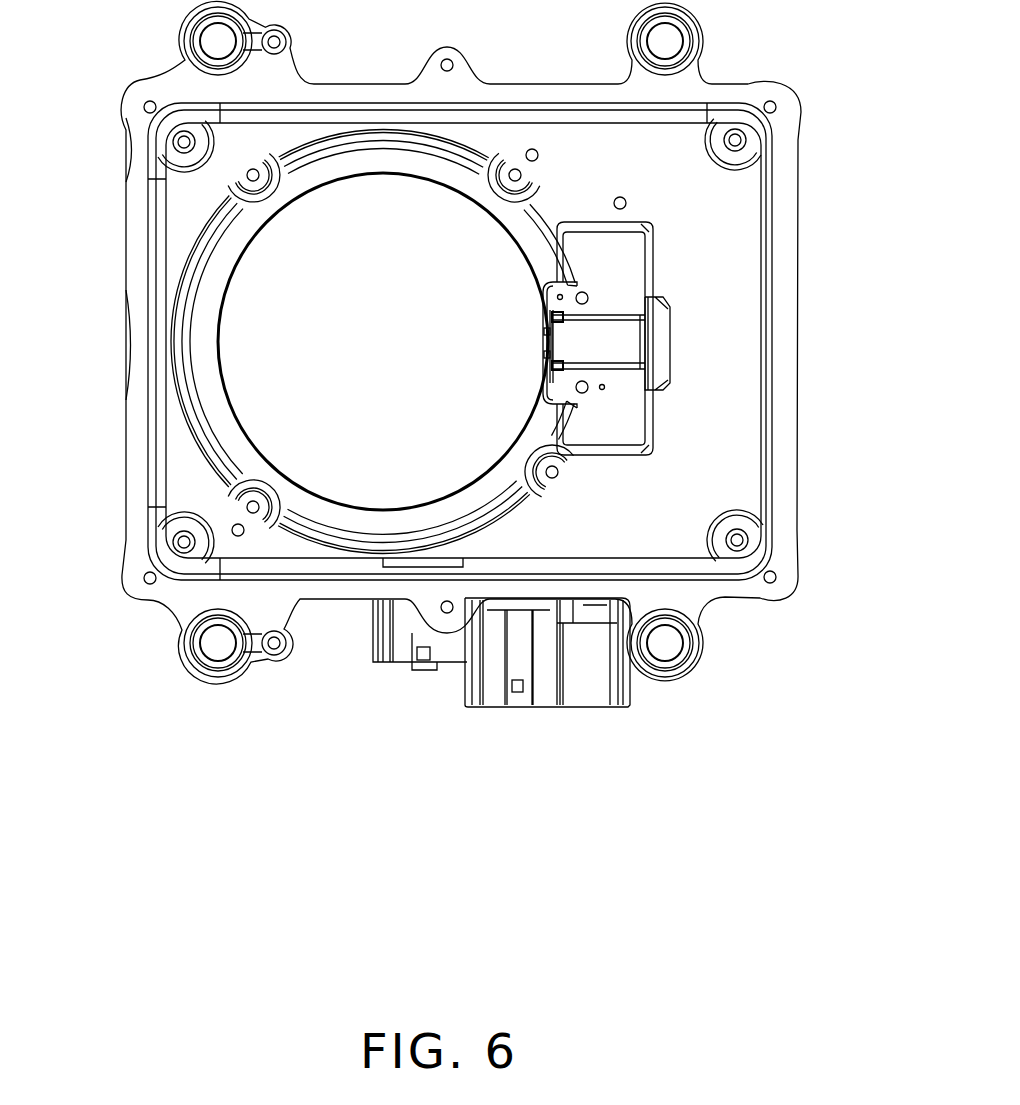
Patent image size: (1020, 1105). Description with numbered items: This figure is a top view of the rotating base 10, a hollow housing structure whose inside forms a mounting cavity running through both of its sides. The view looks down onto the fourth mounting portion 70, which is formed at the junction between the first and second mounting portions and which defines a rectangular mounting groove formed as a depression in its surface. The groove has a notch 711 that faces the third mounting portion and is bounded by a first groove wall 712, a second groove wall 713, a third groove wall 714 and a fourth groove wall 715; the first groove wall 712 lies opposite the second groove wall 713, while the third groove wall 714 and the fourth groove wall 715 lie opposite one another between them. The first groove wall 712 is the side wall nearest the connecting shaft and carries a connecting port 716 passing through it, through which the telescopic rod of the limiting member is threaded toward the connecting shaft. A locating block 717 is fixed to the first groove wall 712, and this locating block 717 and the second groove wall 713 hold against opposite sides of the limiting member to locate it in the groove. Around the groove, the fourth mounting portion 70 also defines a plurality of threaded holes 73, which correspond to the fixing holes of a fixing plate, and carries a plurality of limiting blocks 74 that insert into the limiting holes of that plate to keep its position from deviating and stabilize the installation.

The rotating base 10 is at (138, 200).
The fourth mounting portion 70 is at (626, 252).
The limiting block 74 is at (541, 282).
The notch 711 is at (538, 362).
The first groove wall 712 is at (550, 318).
The second groove wall 713 is at (650, 360).
The third groove wall 714 is at (610, 315).
The fourth groove wall 715 is at (607, 368).
The connecting port 716 is at (543, 347).
The locating block 717 is at (547, 377).
The threaded hole 73 is at (588, 392).